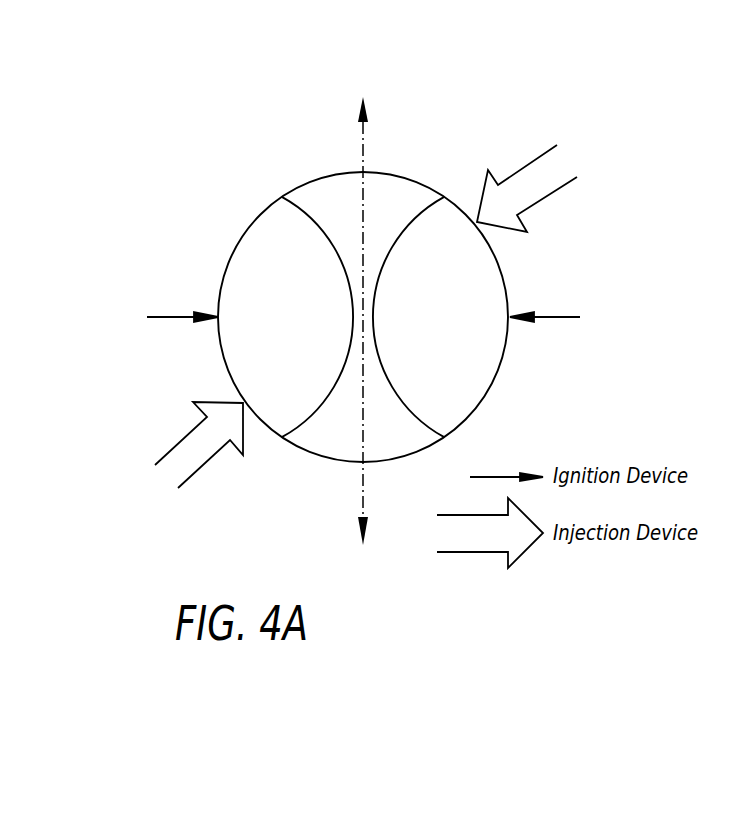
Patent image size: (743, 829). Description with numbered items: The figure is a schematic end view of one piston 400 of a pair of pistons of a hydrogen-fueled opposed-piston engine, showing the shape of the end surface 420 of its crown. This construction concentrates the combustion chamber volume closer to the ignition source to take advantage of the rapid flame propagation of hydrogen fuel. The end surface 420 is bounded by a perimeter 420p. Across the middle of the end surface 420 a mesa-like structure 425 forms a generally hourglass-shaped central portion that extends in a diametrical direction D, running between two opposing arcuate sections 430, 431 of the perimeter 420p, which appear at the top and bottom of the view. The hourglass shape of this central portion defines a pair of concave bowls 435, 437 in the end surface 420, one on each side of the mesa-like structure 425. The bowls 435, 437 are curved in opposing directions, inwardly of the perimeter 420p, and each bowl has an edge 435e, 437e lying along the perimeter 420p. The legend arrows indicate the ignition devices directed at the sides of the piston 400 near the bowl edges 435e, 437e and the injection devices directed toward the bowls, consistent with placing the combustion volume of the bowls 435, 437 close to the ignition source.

The piston 400 is at (261, 142).
The mesa-like structure 425 is at (383, 183).
The arcuate section of the perimeter 430 is at (337, 173).
The arcuate section of the perimeter 431 is at (328, 460).
The concave bowl 435 is at (247, 348).
The edge of concave bowl 435e is at (233, 253).
The concave bowl 437 is at (465, 375).
The edge of concave bowl 437e is at (503, 273).
The end surface 420 is at (393, 430).
The perimeter 420p is at (425, 183).